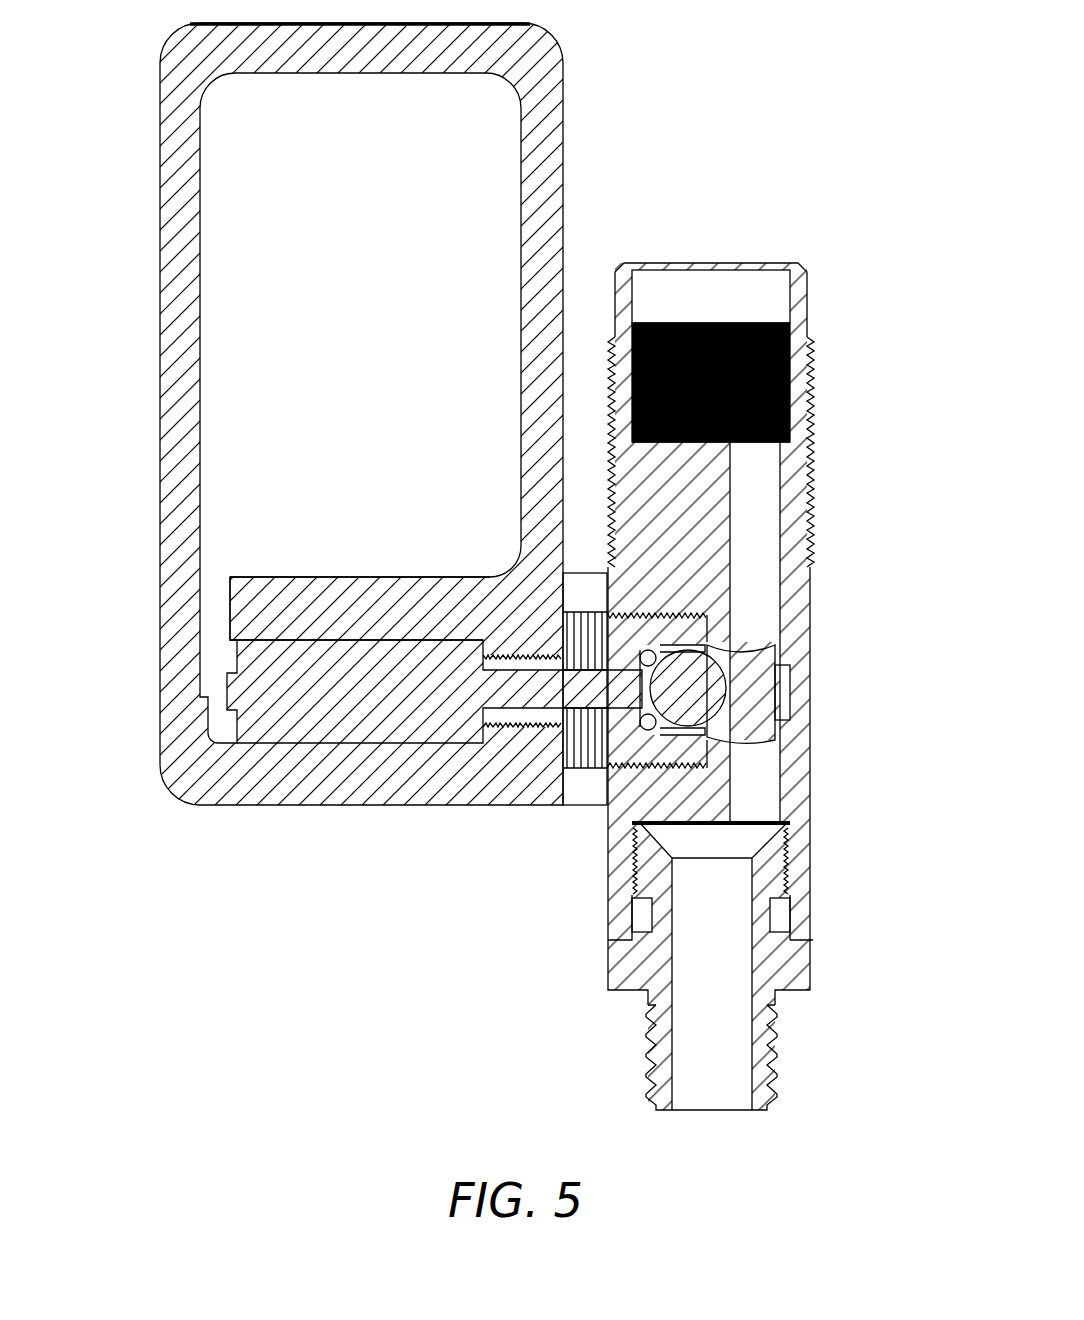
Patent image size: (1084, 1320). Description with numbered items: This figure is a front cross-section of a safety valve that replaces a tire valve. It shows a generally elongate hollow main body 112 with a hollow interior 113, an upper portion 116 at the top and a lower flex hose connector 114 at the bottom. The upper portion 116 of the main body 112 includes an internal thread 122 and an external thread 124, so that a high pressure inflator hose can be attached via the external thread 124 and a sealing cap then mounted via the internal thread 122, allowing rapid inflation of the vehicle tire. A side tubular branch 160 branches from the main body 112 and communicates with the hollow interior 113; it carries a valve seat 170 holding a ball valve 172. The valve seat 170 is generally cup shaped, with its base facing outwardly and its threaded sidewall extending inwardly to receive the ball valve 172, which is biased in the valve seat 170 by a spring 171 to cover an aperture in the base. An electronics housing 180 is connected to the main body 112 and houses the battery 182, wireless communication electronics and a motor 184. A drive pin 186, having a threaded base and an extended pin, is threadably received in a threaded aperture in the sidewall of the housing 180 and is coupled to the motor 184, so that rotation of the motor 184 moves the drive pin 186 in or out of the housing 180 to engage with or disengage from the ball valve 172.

The main body 112 is at (805, 783).
The hollow interior 113 is at (742, 507).
The lower flex hose connector 114 is at (778, 1057).
The upper portion 116 is at (737, 293).
The internal thread 122 is at (658, 323).
The external thread 124 is at (820, 406).
The side tubular branch 160 is at (590, 785).
The valve seat 170 is at (698, 613).
The spring 171 is at (745, 710).
The ball valve 172 is at (683, 680).
The electronics housing 180 is at (150, 393).
The battery 182 is at (413, 242).
The motor 184 is at (220, 770).
The drive pin 186 is at (505, 725).